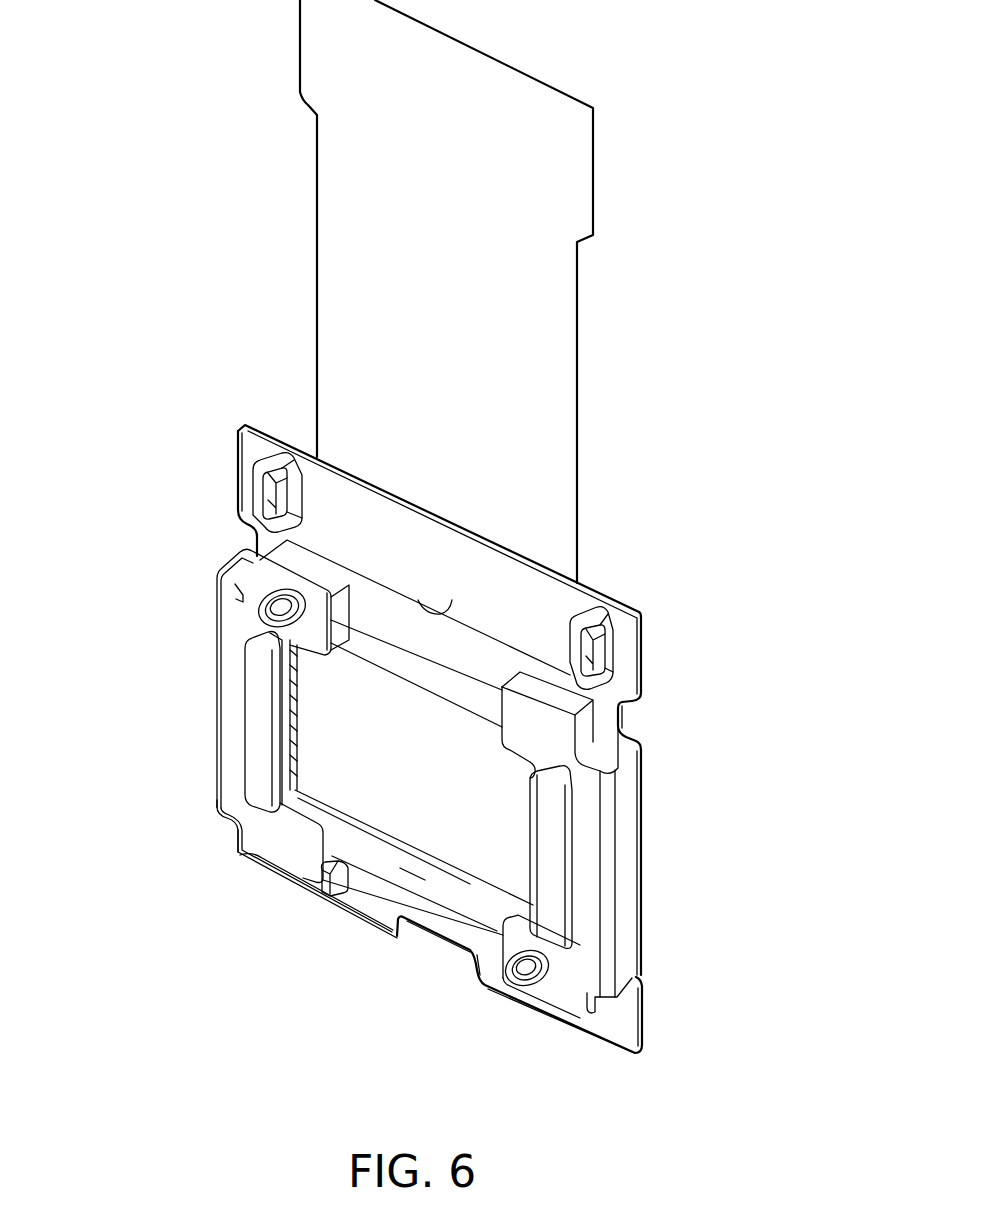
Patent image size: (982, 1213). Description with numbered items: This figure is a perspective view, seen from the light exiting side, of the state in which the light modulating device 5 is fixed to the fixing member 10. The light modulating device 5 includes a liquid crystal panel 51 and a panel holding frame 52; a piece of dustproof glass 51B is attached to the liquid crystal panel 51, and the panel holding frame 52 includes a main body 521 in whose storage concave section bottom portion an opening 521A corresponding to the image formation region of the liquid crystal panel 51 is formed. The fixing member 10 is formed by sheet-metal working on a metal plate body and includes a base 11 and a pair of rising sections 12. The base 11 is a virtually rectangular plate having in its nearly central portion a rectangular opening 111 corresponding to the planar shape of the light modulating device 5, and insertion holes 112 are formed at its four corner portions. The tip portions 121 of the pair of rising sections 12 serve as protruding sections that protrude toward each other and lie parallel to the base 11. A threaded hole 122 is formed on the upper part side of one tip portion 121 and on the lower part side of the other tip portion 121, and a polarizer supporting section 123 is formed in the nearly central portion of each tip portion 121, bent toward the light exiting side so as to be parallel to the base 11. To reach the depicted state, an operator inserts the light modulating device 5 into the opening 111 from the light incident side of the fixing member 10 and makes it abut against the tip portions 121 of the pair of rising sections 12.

The fixing member 10 is at (698, 523).
The base 11 is at (583, 603).
The rectangular opening 111 is at (433, 612).
The insertion holes 112 is at (268, 488).
The rising sections 12 is at (220, 633).
The tip portion 121 is at (228, 805).
The threaded hole 122 is at (263, 615).
The polarizer supporting section 123 is at (257, 737).
The light modulating device 5 is at (389, 1017).
The liquid crystal panel 51 is at (350, 798).
The dustproof glass 51B is at (418, 832).
The panel holding frame 52 is at (380, 855).
The main body 521 is at (315, 560).
The opening 521A is at (472, 870).